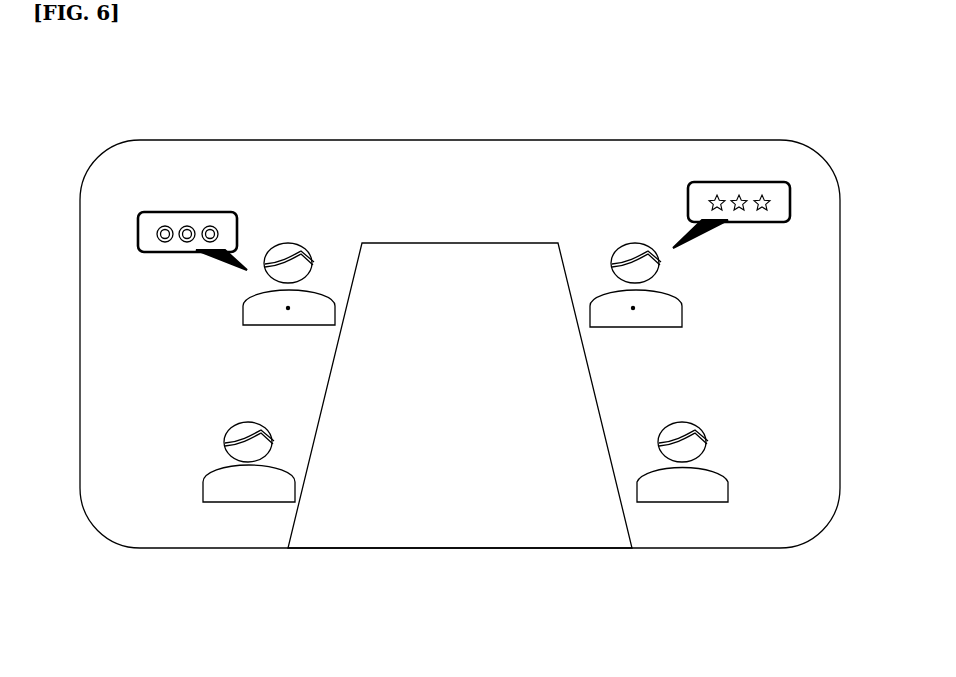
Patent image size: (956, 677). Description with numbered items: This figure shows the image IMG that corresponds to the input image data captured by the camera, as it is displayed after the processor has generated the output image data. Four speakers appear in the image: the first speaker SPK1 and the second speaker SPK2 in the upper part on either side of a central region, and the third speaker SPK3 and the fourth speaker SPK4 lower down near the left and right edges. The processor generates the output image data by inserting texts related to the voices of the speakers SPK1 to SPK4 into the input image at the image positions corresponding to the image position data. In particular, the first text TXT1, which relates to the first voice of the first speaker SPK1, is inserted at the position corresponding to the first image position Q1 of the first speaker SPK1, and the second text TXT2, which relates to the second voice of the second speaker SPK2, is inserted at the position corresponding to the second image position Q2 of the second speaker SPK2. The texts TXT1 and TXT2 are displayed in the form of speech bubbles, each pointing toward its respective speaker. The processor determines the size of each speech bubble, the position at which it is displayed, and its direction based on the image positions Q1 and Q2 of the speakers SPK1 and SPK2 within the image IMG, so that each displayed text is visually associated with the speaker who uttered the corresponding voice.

The image IMG is at (527, 152).
The first text TXT1 is at (205, 206).
The second text TXT2 is at (676, 192).
The first speaker SPK1 is at (252, 312).
The second speaker SPK2 is at (667, 303).
The third speaker SPK3 is at (215, 490).
The fourth speaker SPK4 is at (717, 488).
The first image position Q1 is at (289, 310).
The second image position Q2 is at (634, 310).